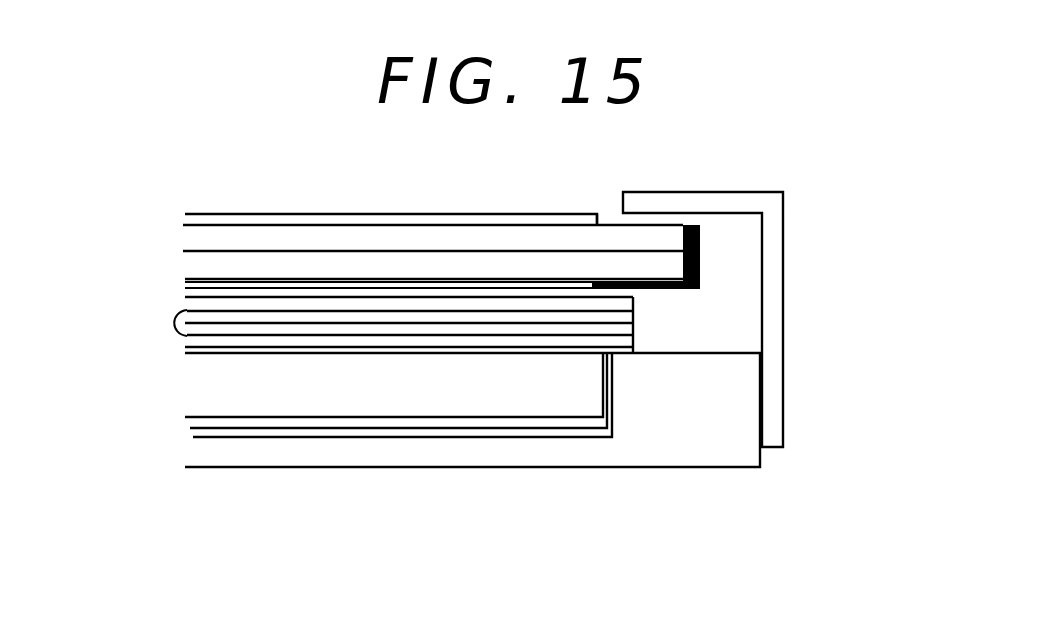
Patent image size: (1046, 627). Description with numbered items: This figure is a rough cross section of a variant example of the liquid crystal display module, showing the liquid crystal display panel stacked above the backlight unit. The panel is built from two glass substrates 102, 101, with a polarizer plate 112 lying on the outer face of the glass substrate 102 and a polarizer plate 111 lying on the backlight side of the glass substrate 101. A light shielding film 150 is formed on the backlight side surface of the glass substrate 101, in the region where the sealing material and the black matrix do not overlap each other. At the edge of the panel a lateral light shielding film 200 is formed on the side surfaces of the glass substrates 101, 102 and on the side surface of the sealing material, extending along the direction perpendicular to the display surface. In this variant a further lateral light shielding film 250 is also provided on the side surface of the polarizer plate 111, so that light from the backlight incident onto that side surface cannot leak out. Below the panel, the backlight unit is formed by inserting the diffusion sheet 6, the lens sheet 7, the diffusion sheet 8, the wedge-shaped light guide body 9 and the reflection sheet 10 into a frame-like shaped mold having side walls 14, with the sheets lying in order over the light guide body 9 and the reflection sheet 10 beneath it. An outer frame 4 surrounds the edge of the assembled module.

The polarizer plate 112 is at (239, 213).
The glass substrate 102 is at (198, 240).
The glass substrate 101 is at (198, 270).
The polarizer plate 111 is at (190, 286).
The light shielding film 150 is at (672, 288).
The lateral light shielding film 200 is at (702, 230).
The lateral light shielding film 250 is at (596, 280).
The diffusion sheet 6 is at (187, 302).
The lens sheet 7 is at (177, 322).
The diffusion sheet 8 is at (186, 342).
The light guide body 9 is at (202, 387).
The reflection sheet 10 is at (193, 424).
The side walls 14 is at (675, 460).
The upper frame 4 is at (772, 247).